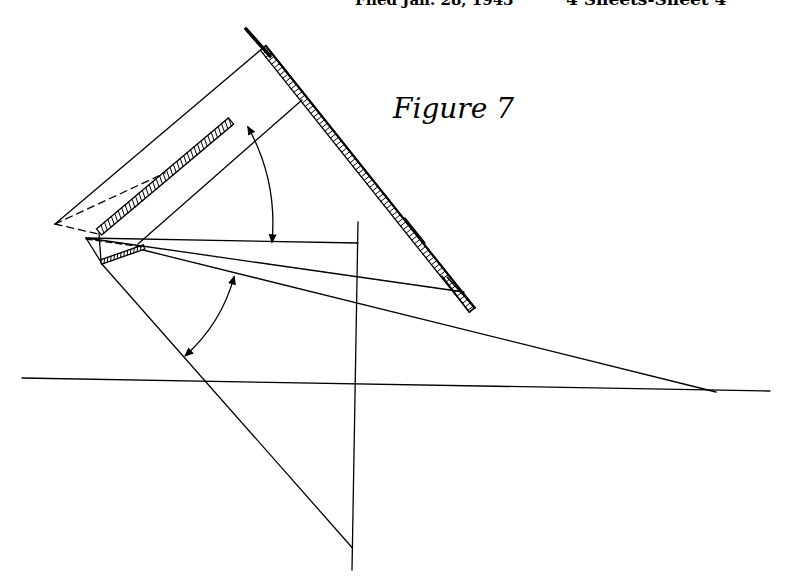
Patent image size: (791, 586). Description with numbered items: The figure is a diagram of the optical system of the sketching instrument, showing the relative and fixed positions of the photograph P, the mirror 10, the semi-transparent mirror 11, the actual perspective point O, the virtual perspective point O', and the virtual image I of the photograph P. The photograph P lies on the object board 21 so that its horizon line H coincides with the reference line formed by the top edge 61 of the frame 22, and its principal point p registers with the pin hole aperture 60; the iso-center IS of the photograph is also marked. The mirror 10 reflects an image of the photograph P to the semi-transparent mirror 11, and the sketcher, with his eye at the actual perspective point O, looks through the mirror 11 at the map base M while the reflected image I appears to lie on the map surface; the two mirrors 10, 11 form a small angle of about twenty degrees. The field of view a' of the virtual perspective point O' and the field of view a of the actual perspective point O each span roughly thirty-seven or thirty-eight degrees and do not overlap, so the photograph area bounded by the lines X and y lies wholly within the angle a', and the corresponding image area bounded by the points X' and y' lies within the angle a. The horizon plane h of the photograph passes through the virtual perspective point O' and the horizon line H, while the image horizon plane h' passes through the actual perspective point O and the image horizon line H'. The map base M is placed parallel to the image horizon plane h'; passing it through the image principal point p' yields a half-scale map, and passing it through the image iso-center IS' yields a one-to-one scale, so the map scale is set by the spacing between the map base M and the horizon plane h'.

The mirror 10 is at (216, 130).
The semi-transparent mirror 11 is at (101, 263).
The object board 21 is at (419, 243).
The frame 22 is at (271, 64).
The point (pin hole aperture) 60 is at (352, 156).
The top edge (reference line) 61 is at (260, 49).
The horizon line H is at (239, 35).
The horizon plane h is at (159, 136).
The line x X is at (220, 172).
The image horizon plane h' is at (222, 234).
The map base M is at (170, 381).
The field of view of virtual perspective point a' is at (255, 184).
The field of view of actual perspective point a is at (210, 316).
The principal point p is at (330, 170).
The photograph P is at (367, 186).
The iso-center IS is at (416, 265).
The line y is at (477, 283).
The image horizon line H' is at (375, 242).
The image line x' X' is at (341, 320).
The virtual image I is at (359, 365).
The image principal point p' is at (372, 405).
The image iso-center IS' is at (371, 508).
The image line y' is at (370, 554).
The virtual perspective point O' is at (38, 220).
The actual perspective point O is at (63, 250).